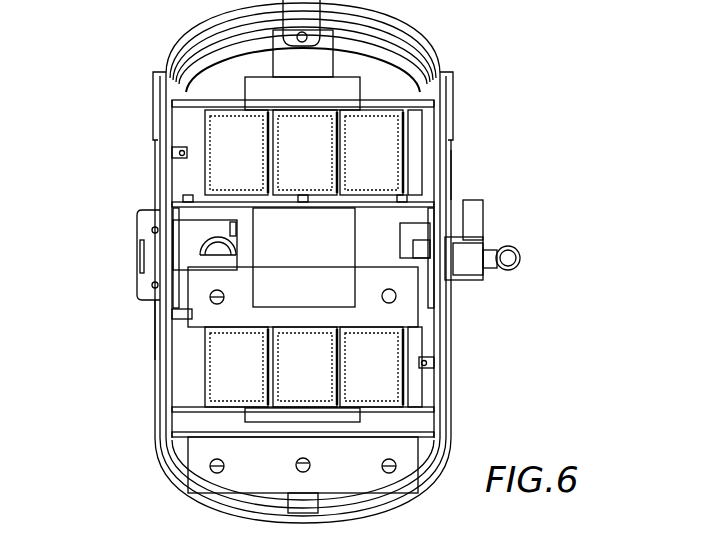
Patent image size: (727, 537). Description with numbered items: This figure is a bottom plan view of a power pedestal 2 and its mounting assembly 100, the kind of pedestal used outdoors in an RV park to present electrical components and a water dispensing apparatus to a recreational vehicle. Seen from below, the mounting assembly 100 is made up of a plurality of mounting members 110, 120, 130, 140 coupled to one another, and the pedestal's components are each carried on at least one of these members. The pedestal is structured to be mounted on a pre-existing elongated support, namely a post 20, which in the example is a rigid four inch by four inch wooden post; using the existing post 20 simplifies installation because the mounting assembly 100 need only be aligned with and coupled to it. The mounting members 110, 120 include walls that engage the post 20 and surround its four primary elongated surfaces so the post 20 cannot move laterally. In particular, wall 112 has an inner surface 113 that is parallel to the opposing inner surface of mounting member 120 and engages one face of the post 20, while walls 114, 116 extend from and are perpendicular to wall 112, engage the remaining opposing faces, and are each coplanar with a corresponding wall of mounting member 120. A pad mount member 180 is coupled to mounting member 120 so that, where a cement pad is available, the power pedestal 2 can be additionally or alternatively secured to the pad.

The power pedestal 2 is at (336, 261).
The post 20 is at (287, 263).
The mounting assembly 100 is at (295, 261).
The mounting member 110 is at (253, 203).
The wall 112 is at (292, 203).
The inner surface 113 is at (310, 210).
The wall 114 is at (247, 210).
The wall 116 is at (358, 210).
The mounting member 120 is at (172, 313).
The mounting member 130 is at (153, 330).
The mounting member 140 is at (448, 183).
The pad mount member 180 is at (203, 482).